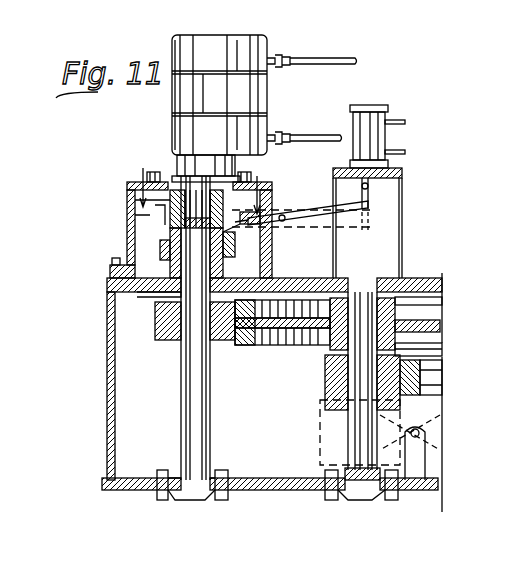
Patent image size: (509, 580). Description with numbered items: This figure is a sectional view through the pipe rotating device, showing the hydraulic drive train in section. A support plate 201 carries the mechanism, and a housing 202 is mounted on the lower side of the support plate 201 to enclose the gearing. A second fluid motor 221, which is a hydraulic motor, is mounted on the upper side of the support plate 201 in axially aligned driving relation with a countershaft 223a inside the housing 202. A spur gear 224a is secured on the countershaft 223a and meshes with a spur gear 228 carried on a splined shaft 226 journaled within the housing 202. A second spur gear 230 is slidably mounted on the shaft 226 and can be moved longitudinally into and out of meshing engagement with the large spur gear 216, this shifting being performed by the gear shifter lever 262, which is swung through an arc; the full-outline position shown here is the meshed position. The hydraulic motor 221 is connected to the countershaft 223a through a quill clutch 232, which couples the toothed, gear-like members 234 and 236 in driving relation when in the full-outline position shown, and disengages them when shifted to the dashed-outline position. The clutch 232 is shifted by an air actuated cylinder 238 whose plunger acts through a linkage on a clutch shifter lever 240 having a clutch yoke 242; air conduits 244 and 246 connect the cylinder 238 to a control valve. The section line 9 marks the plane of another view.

The second fluid motor 221 is at (172, 100).
The toothed gear-like member 236 is at (175, 182).
The section line 9 is at (195, 188).
The clutch 232 is at (170, 229).
The toothed gear-like member 234 is at (170, 252).
The clutch shifter lever 240 is at (318, 210).
The clutch yoke 242 is at (266, 232).
The air actuated cylinder 238 is at (378, 138).
The air conduit 246 is at (400, 118).
The air conduit 244 is at (400, 154).
The support plate 201 is at (282, 378).
The housing 202 is at (110, 385).
The countershaft 223a is at (205, 408).
The spur gear 224a is at (160, 330).
The spur gear 228 is at (295, 332).
The shaft 226 is at (342, 452).
The second spur gear 230 is at (330, 380).
The large spur gear 216 is at (435, 366).
The gear shifter lever 262 is at (430, 444).